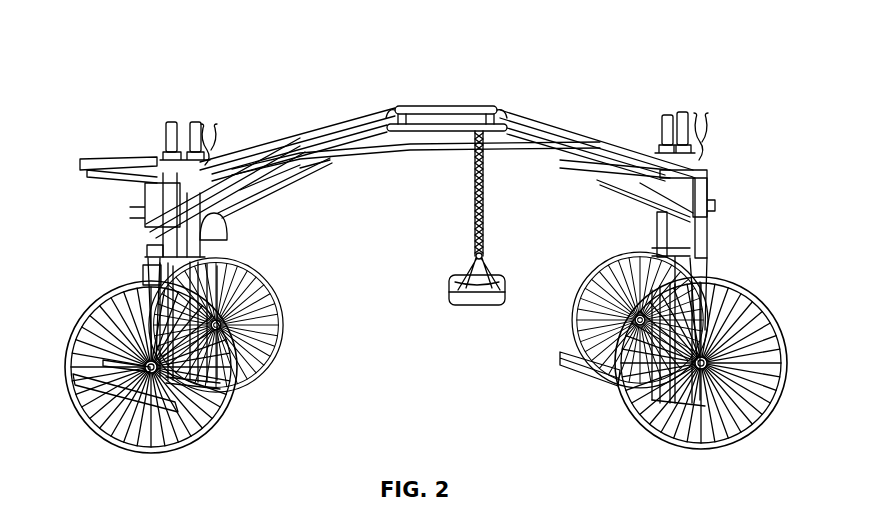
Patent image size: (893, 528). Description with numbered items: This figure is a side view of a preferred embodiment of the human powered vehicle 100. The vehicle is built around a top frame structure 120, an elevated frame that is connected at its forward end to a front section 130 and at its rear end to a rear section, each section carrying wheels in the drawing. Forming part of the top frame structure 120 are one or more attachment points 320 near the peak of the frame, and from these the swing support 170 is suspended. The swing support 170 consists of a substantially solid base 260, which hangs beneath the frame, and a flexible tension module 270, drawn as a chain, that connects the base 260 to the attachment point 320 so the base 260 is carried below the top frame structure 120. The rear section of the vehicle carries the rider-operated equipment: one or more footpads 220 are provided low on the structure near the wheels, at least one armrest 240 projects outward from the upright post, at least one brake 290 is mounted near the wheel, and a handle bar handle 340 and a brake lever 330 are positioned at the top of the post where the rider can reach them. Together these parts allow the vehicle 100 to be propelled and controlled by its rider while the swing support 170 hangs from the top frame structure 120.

The human powered vehicle 100 is at (127, 69).
The top frame structure 120 is at (352, 128).
The front section 130 is at (694, 252).
The swing support 170 is at (446, 278).
The footpad 220 is at (90, 403).
The armrest 240 is at (90, 177).
The substantially solid base 260 is at (480, 306).
The flexible tension module 270 is at (486, 214).
The brake 290 is at (145, 278).
The attachment point 320 is at (480, 124).
The brake lever 330 is at (212, 148).
The handle bar handle 340 is at (166, 132).